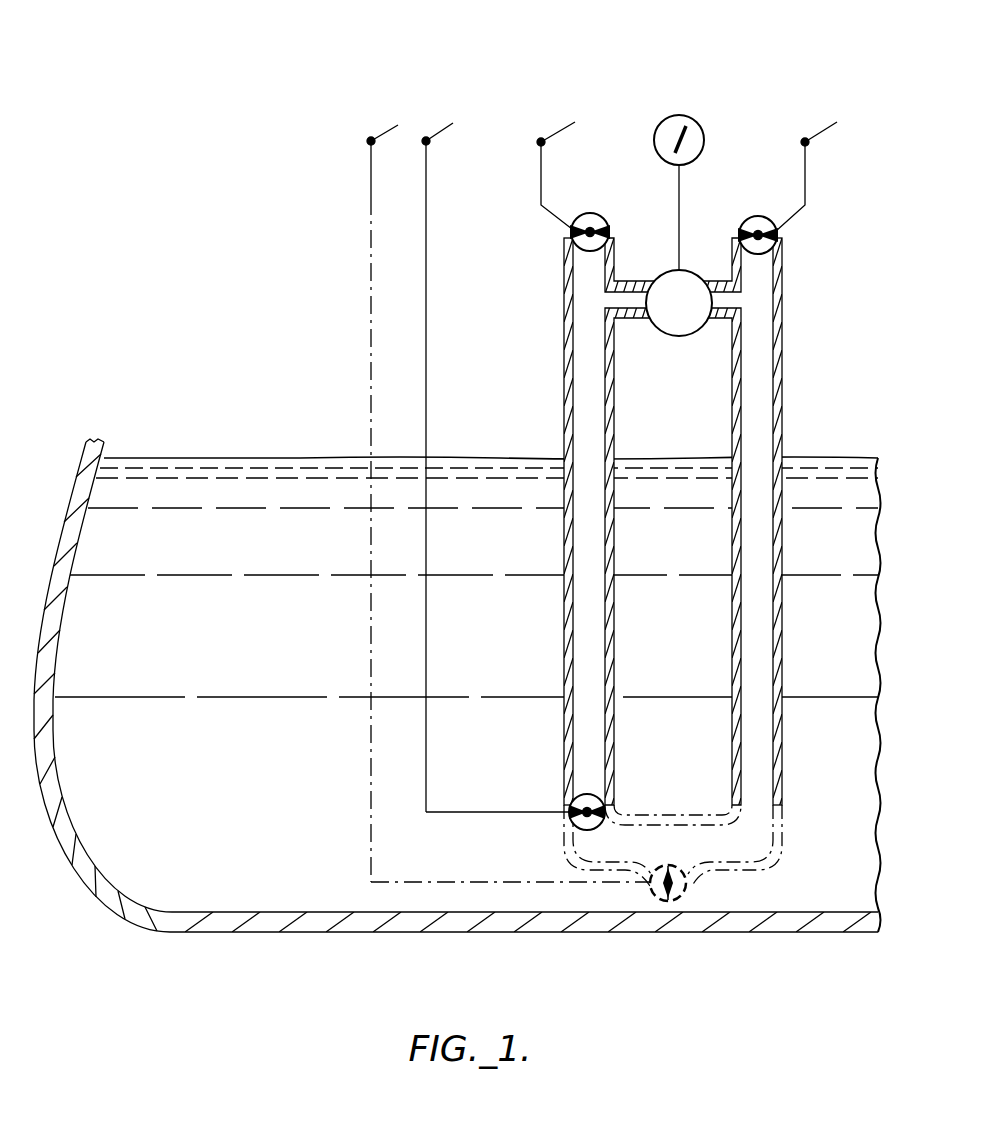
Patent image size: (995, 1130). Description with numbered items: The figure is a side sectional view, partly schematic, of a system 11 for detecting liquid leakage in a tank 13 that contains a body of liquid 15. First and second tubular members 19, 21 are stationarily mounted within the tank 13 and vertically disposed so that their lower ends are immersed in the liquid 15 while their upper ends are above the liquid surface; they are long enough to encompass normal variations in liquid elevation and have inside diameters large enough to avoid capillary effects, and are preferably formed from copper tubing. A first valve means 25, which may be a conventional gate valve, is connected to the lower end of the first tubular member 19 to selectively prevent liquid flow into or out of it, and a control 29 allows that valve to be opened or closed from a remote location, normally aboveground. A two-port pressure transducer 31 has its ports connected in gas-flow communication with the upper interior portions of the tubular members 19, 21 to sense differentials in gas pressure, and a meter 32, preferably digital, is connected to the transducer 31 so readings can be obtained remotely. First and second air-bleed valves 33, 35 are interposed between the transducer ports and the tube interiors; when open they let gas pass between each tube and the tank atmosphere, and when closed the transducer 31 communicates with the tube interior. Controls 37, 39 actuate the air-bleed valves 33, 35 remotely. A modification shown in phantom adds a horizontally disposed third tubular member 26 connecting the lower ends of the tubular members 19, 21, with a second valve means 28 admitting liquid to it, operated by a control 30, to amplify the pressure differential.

The system 11 is at (295, 328).
The tank 13 is at (357, 933).
The body of liquid 15 is at (268, 457).
The first tubular member 19 is at (566, 284).
The second tubular member 21 is at (785, 282).
The first valve means 25 is at (578, 798).
The third tubular member 26 is at (697, 817).
The second valve means 28 is at (690, 884).
The control 29 is at (436, 118).
The control 30 is at (378, 118).
The pressure transducer 31 is at (705, 282).
The meter 32 is at (686, 114).
The first air-bleed valve 33 is at (604, 219).
The second air-bleed valve 35 is at (744, 222).
The control 37 is at (545, 113).
The control 39 is at (809, 115).